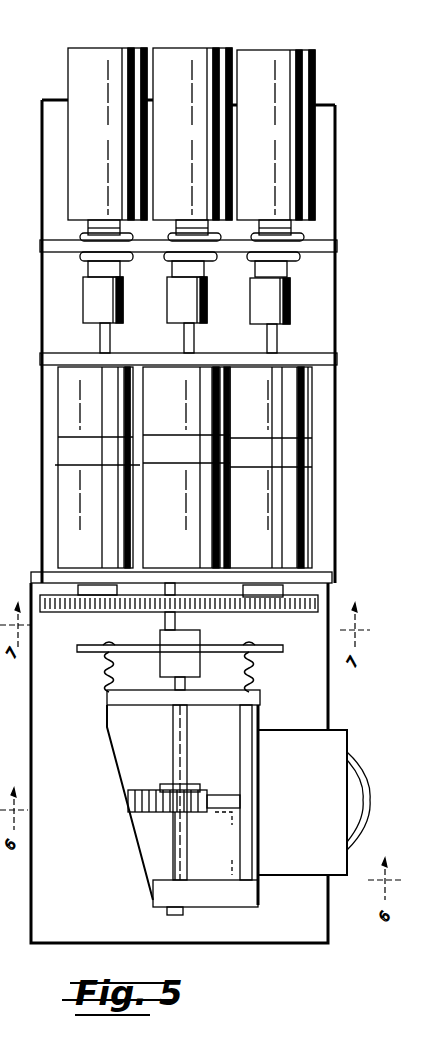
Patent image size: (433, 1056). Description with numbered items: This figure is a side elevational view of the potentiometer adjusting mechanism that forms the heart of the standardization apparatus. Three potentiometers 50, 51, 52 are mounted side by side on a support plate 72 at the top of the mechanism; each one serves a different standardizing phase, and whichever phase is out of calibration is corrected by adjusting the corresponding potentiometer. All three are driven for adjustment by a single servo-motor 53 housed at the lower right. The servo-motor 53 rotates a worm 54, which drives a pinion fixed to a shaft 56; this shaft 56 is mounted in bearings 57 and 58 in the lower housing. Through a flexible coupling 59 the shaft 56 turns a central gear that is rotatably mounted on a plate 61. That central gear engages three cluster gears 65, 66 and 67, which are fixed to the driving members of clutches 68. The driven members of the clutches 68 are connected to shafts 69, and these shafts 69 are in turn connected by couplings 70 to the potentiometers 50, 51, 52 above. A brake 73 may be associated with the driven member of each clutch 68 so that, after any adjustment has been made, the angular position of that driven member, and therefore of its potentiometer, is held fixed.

The potentiometer 50 is at (281, 65).
The potentiometer 51 is at (185, 62).
The potentiometer 52 is at (98, 62).
The servo-motor 53 is at (340, 748).
The worm 54 is at (218, 795).
The shaft 56 is at (173, 852).
The bearing 57 is at (216, 892).
The bearing 58 is at (202, 700).
The flexible coupling 59 is at (200, 640).
The plate 61 is at (330, 578).
The cluster gear 65 is at (312, 614).
The cluster gear 66 is at (160, 612).
The cluster gear 67 is at (55, 614).
The clutch 68 is at (114, 552).
The shaft 69 is at (112, 340).
The coupling 70 is at (124, 298).
The support plate 72 is at (330, 247).
The brake 73 is at (110, 452).